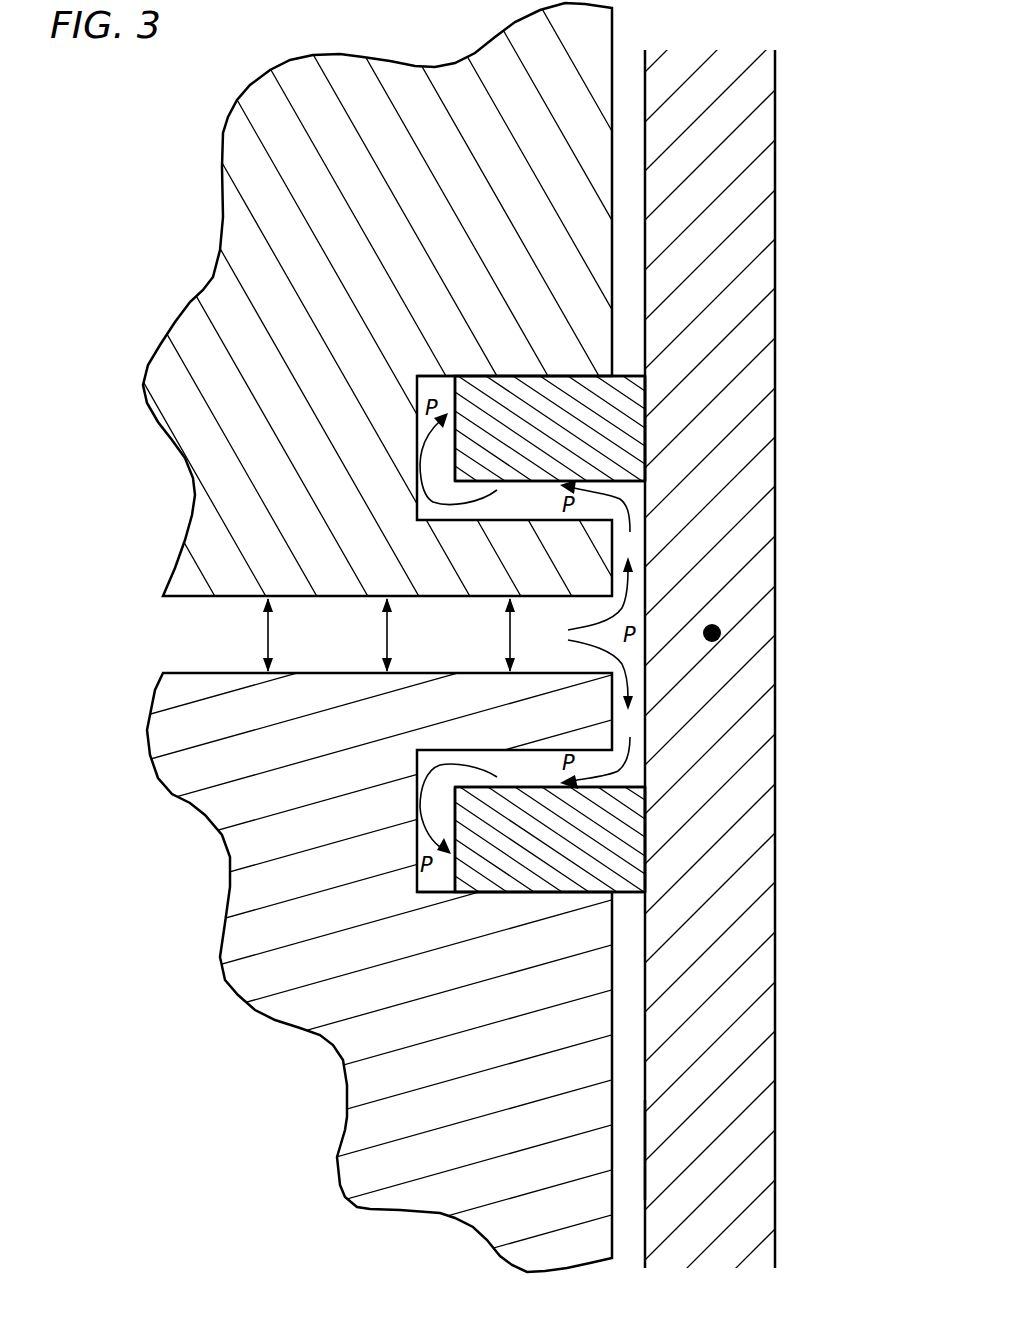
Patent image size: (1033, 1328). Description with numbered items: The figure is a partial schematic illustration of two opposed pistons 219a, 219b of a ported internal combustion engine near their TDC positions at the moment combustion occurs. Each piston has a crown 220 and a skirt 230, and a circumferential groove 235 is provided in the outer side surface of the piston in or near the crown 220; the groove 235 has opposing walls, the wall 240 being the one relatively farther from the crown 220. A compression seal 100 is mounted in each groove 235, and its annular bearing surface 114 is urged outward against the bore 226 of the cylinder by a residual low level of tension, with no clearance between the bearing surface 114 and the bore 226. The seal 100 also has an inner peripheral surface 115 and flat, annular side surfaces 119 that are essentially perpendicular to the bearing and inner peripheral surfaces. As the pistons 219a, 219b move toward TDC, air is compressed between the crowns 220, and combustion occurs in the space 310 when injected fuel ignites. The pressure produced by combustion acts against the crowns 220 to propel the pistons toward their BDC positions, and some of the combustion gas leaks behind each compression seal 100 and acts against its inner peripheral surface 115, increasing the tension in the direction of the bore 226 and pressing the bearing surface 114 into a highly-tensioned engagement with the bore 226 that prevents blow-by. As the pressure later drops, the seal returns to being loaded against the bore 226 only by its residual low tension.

The compression seal 100 is at (590, 414).
The bearing surface 114 is at (647, 450).
The inner peripheral surface 115 is at (455, 388).
The side surface 119 is at (521, 482).
The piston 219a is at (290, 1075).
The piston 219b is at (198, 224).
The crown 220 is at (440, 664).
The bore 226 is at (645, 1150).
The skirt 230 is at (748, 1082).
The circumferential groove 235 is at (402, 420).
The wall 240 is at (520, 376).
The space 310 is at (464, 645).
The top dead center TDC is at (712, 633).